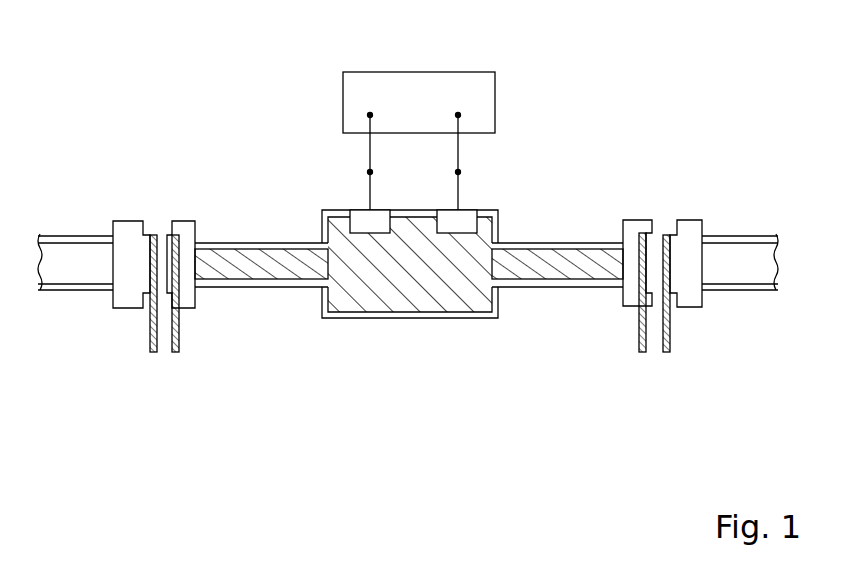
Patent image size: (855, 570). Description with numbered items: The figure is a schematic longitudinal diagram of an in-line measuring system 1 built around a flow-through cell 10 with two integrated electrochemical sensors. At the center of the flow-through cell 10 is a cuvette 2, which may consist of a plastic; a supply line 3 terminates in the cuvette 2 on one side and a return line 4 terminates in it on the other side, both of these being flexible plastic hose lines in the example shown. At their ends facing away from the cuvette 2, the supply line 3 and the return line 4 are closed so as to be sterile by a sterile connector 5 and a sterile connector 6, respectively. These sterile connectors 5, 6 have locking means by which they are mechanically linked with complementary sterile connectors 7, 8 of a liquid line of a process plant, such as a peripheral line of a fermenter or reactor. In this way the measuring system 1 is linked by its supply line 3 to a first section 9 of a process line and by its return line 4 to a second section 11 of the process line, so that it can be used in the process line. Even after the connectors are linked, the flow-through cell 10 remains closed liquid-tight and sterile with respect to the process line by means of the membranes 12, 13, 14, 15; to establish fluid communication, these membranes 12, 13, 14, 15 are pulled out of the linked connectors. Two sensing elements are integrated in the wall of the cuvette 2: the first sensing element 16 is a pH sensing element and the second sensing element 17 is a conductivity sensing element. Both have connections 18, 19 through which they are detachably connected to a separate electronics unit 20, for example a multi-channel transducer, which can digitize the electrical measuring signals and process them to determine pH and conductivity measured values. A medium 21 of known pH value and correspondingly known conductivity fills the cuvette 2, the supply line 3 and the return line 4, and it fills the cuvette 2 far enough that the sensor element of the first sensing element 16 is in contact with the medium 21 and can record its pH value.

The in-line measuring system 1 is at (597, 136).
The cuvette 2 is at (481, 306).
The supply line 3 is at (273, 281).
The return line 4 is at (555, 281).
The sterile connector 5 is at (182, 233).
The sterile connector 6 is at (630, 232).
The complementary sterile connector 7 is at (127, 233).
The complementary sterile connector 8 is at (686, 232).
The first section of a process line 9 is at (74, 274).
The flow-through cell 10 is at (346, 384).
The second section of a process line 11 is at (740, 255).
The membrane 12 is at (151, 353).
The membrane 13 is at (177, 353).
The membrane 14 is at (642, 353).
The membrane 15 is at (667, 353).
The first sensing element 16 is at (362, 222).
The second sensing element 17 is at (468, 222).
The connection 18 is at (370, 172).
The connection 19 is at (458, 172).
The electronics unit 20 is at (466, 84).
The medium 21 is at (441, 300).